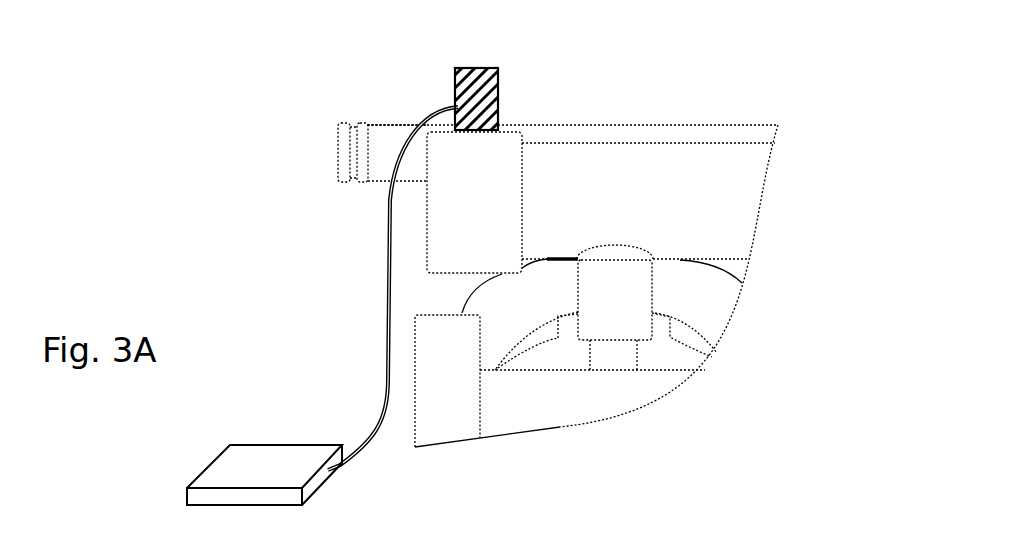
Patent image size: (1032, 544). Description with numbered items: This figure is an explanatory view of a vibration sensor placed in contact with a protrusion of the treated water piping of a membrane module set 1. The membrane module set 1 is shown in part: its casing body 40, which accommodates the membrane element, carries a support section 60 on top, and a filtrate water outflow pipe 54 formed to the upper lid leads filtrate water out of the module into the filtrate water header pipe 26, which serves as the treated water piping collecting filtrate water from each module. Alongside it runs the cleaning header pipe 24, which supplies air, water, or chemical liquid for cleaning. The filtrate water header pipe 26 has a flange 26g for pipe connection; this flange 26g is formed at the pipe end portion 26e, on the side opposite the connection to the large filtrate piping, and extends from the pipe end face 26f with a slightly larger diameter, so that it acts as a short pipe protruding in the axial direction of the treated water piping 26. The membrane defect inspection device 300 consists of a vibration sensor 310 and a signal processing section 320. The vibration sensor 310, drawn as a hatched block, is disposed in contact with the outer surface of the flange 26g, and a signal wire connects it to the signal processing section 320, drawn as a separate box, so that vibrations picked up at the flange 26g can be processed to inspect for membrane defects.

The membrane module set 1 is at (797, 390).
The cleaning header pipe 24 is at (343, 135).
The filtrate water header pipe 26 is at (735, 225).
The pipe end portion 26e is at (436, 256).
The pipe end face 26f is at (522, 147).
The flange 26g is at (445, 138).
The casing body 40 is at (610, 402).
The filtrate water outflow pipe 54 is at (638, 297).
The support section 60 is at (720, 285).
The membrane defect inspection device 300 is at (446, 273).
The vibration sensor 310 is at (498, 82).
The signal processing section 320 is at (325, 482).